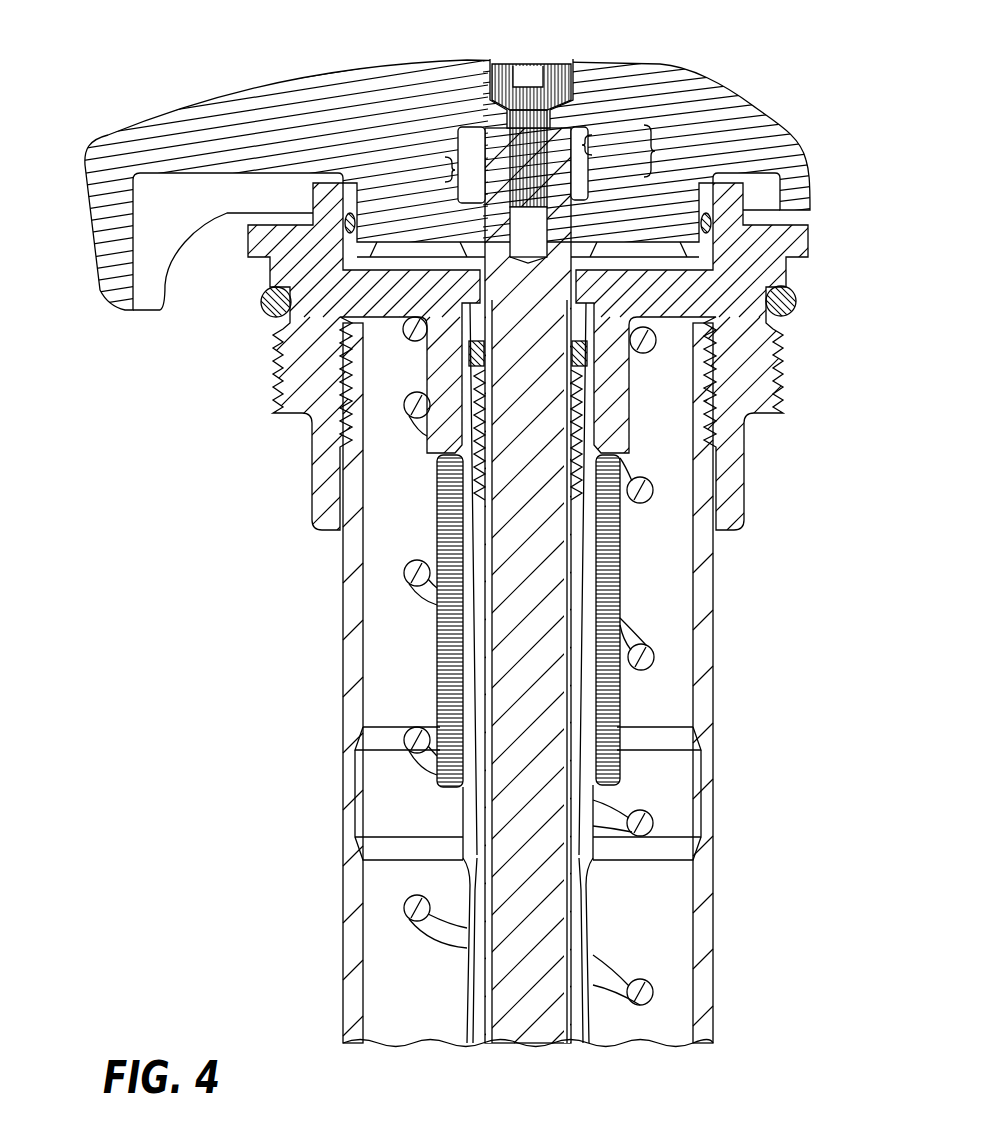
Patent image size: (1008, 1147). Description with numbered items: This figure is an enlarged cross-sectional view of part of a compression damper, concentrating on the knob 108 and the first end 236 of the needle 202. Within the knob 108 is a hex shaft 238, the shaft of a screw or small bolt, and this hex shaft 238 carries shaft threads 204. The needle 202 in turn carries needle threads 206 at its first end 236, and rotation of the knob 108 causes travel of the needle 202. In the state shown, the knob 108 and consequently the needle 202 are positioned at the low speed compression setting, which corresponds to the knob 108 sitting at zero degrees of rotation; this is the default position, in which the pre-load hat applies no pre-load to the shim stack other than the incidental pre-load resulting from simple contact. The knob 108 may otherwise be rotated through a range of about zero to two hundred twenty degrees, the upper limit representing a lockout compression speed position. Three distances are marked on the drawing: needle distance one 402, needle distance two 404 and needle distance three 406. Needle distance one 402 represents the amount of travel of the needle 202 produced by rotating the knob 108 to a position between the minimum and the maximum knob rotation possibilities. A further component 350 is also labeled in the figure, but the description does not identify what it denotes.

The knob 108 is at (99, 277).
The needle 202 is at (537, 303).
The shaft threads 204 is at (571, 125).
The needle threads 206 is at (550, 163).
The first end 236 is at (485, 135).
The hex shaft 238 is at (497, 63).
The bonnet 350 is at (585, 400).
The needle distance one 402 is at (604, 146).
The needle distance two 404 is at (667, 151).
The needle distance three 406 is at (431, 169).